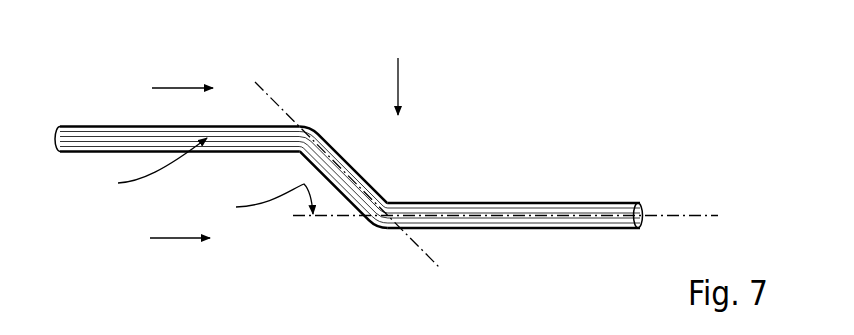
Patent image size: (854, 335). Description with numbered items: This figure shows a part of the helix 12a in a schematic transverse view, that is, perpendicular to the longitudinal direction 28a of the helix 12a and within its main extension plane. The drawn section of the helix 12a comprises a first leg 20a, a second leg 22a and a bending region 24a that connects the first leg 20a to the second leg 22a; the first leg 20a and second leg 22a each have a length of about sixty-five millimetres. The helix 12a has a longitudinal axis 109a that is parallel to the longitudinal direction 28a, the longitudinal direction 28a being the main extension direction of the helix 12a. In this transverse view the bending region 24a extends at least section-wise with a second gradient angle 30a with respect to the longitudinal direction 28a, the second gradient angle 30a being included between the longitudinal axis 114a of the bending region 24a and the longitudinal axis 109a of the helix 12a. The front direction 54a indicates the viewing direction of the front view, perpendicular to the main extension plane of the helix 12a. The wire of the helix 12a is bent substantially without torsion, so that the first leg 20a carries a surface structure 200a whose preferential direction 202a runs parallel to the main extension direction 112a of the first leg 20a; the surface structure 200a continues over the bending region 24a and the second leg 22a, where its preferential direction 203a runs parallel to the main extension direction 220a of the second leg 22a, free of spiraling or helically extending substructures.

The helix 12a is at (339, 139).
The first leg 20a is at (132, 142).
The second leg 22a is at (553, 203).
The bending region 24a is at (350, 177).
The longitudinal direction 28a is at (178, 240).
The second gradient angle 30a is at (250, 202).
The front direction 54a is at (398, 84).
The longitudinal axis of the helix 109a is at (670, 214).
The longitudinal axis of the bending region 114a is at (423, 247).
The surface structure 200a is at (131, 167).
The preferential direction of the surface structure on the second leg 203a is at (210, 45).
The main extension direction of the first leg 112a is at (210, 45).
The main extension direction of the second leg 220a is at (210, 45).
The preferential direction of the surface structure on the first leg 202a is at (178, 88).